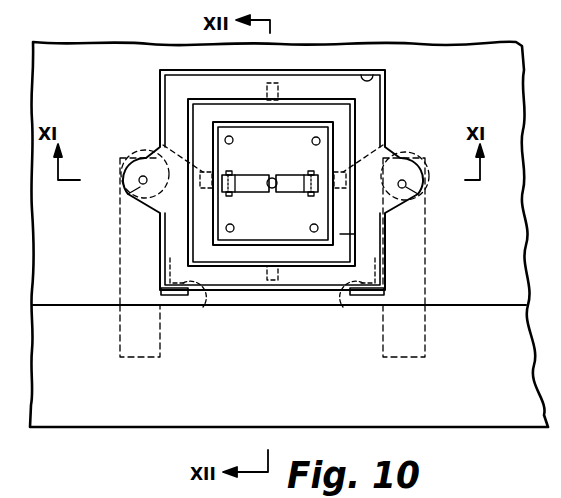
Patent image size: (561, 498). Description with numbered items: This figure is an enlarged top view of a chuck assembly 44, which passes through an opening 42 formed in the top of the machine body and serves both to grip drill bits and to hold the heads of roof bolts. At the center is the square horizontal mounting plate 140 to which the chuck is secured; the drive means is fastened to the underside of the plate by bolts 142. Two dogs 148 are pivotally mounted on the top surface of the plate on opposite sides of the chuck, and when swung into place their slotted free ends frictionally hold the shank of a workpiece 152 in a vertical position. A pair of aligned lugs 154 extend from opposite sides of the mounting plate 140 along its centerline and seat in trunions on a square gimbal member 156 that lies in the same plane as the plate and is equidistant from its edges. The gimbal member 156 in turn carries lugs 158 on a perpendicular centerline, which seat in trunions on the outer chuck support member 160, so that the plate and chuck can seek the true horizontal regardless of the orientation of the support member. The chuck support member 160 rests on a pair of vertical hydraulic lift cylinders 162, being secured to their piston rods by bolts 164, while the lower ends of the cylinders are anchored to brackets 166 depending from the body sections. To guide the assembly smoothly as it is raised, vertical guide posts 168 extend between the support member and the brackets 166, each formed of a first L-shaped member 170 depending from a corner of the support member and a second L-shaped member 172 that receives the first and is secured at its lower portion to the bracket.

The opening 42 is at (370, 73).
The chuck assembly 44 is at (368, 123).
The mounting plate 140 is at (298, 164).
The bolt 142 is at (230, 135).
The dog 148 is at (253, 194).
The workpiece 152 is at (277, 193).
The lug 154 is at (160, 148).
The gimbal member 156 is at (355, 234).
The lug 158 is at (281, 100).
The chuck support member 160 is at (231, 286).
The lift cylinder 162 is at (145, 151).
The bolt 164 is at (126, 190).
The bracket 166 is at (117, 272).
The guide post 168 is at (272, 331).
The first L-shaped member 170 is at (178, 303).
The second L-shaped member 172 is at (163, 292).